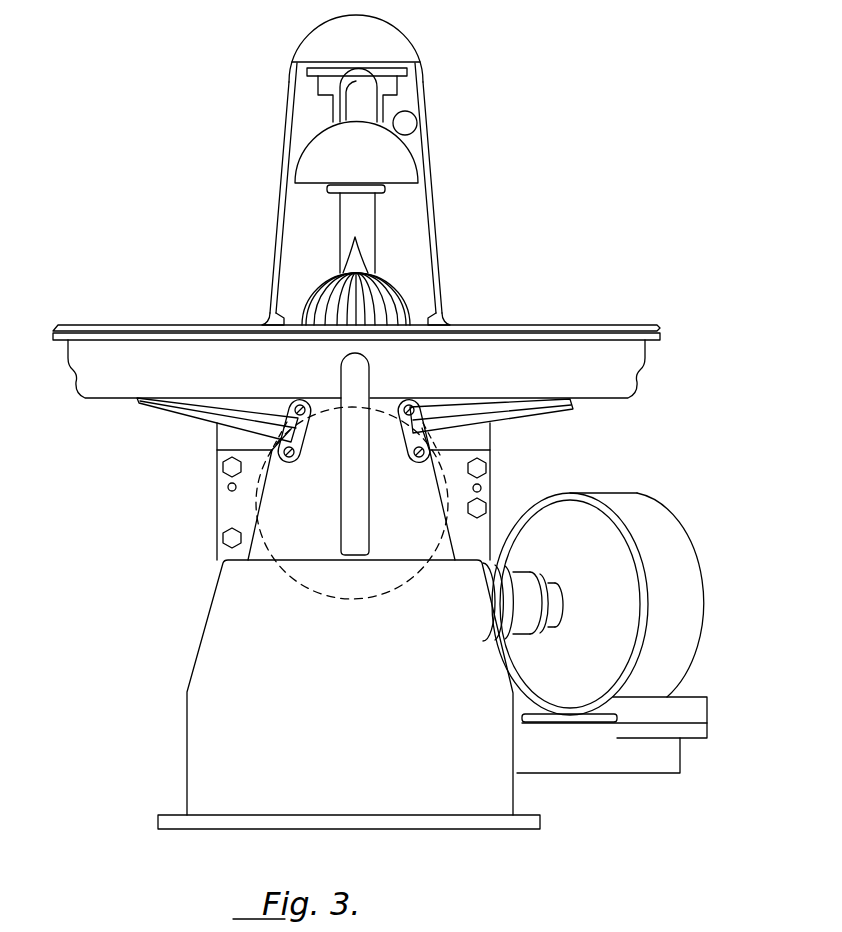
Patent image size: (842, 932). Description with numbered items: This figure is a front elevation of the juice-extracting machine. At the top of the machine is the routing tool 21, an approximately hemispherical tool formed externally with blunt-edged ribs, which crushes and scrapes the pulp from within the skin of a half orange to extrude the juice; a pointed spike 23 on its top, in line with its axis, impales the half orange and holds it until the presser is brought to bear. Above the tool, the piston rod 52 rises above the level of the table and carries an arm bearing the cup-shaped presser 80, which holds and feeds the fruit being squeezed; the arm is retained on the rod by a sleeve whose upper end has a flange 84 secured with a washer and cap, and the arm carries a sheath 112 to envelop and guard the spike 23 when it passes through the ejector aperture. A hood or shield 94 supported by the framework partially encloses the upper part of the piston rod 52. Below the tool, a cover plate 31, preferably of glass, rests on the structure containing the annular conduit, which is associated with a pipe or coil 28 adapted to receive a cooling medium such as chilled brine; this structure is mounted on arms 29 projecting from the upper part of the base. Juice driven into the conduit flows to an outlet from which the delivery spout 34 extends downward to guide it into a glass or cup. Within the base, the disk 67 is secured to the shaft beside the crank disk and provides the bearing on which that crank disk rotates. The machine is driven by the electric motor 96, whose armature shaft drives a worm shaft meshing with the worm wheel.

The routing tool 21 is at (393, 303).
The pointed spike 23 is at (355, 262).
The pipe or coil 28 is at (107, 390).
The arms 29 is at (190, 410).
The cover plate 31 is at (100, 323).
The delivery tube or spout 34 is at (348, 488).
The piston rod 52 is at (345, 220).
The disk 67 is at (330, 587).
The cup-shaped presser or holder and feeder 80 is at (397, 160).
The flange 84 is at (407, 72).
The hood or shield 94 is at (435, 223).
The electric motor 96 is at (632, 502).
The sheath 112 is at (357, 108).